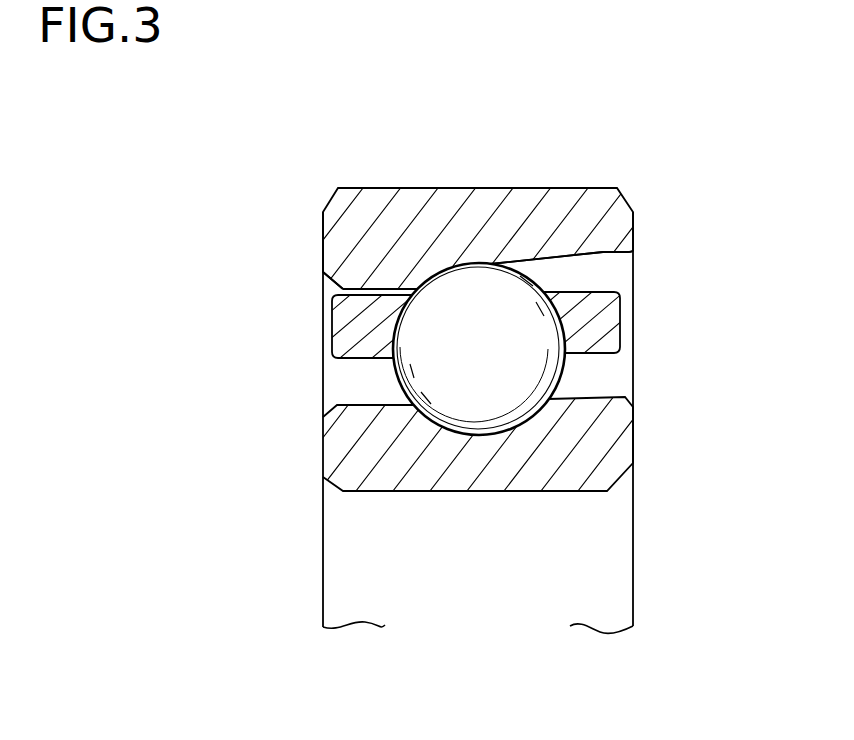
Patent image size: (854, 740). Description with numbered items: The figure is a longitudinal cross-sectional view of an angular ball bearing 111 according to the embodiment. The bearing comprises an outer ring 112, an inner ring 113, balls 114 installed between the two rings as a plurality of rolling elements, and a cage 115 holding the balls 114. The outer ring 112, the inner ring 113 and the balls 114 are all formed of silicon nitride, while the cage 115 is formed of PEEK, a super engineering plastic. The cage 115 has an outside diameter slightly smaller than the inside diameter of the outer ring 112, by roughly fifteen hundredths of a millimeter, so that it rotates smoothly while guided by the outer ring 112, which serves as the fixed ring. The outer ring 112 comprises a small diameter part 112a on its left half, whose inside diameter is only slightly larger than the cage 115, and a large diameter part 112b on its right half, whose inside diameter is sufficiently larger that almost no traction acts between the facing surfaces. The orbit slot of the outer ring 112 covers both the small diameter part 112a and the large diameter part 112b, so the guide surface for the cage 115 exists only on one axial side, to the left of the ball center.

The rolling bearing 111 is at (655, 280).
The outer ring 112 is at (558, 195).
The small diameter part 112a is at (338, 243).
The large diameter part 112b is at (607, 222).
The inner ring 113 is at (617, 438).
The balls 114 is at (528, 372).
The cage 115 is at (603, 327).